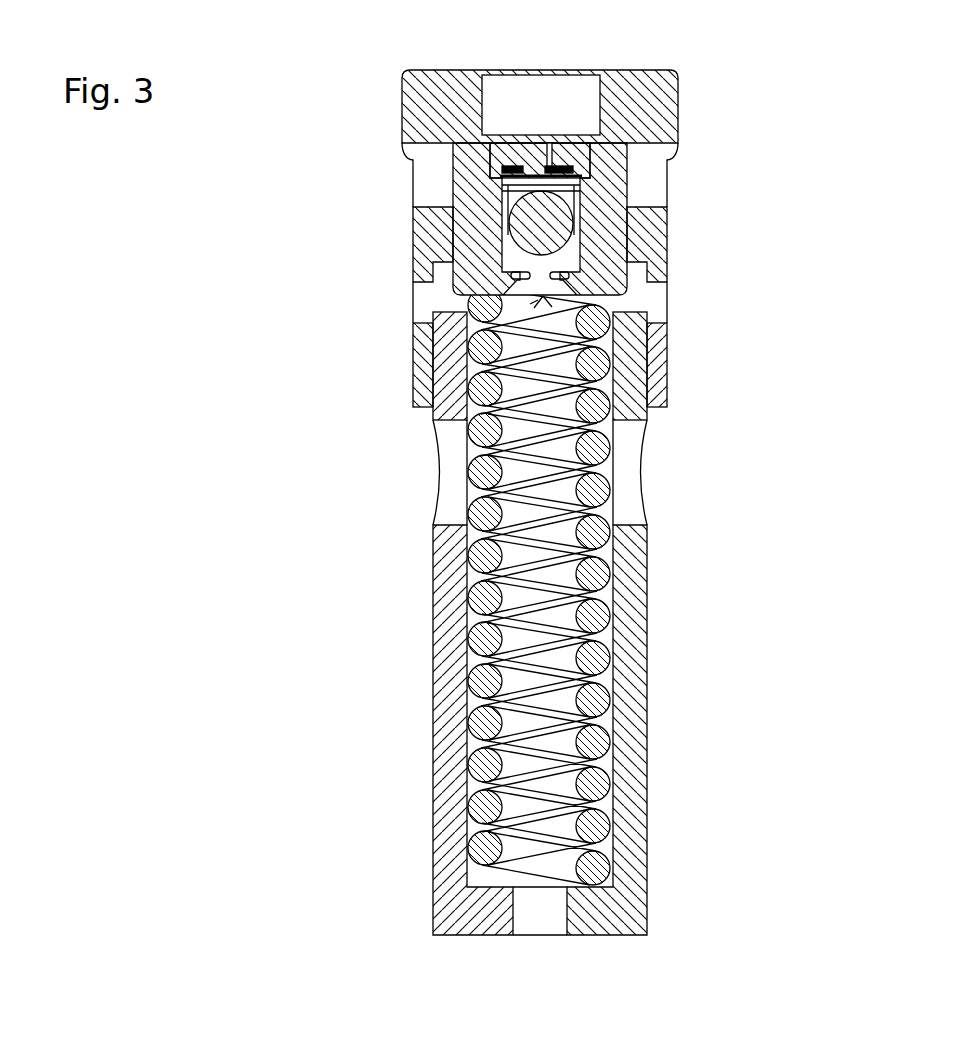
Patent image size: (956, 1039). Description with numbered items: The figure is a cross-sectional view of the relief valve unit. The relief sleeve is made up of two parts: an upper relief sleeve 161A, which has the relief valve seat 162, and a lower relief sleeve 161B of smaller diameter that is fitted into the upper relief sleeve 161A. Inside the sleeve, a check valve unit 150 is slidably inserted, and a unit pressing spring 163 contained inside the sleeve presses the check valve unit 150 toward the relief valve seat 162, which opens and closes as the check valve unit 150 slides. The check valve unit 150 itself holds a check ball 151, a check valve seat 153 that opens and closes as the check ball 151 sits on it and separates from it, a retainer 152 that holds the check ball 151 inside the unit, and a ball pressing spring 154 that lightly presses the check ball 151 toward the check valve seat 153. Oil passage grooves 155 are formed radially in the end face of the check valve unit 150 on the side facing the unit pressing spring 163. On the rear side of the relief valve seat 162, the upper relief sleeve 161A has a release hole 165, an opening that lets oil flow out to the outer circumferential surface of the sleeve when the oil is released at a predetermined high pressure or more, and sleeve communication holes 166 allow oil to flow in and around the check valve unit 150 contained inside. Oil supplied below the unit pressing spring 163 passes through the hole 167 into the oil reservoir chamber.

The check valve unit 150 is at (452, 210).
The check ball 151 is at (560, 225).
The retainer 152 is at (590, 160).
The check valve seat 153 is at (590, 248).
The ball pressing spring 154 is at (578, 186).
The oil passage grooves 155 is at (543, 297).
The upper relief sleeve 161A is at (412, 353).
The lower relief sleeve 161B is at (433, 655).
The relief valve seat 162 is at (452, 160).
The unit pressing spring 163 is at (593, 617).
The release hole 165 is at (412, 177).
The sleeve communication holes 166 is at (411, 300).
The hole 167 is at (446, 470).